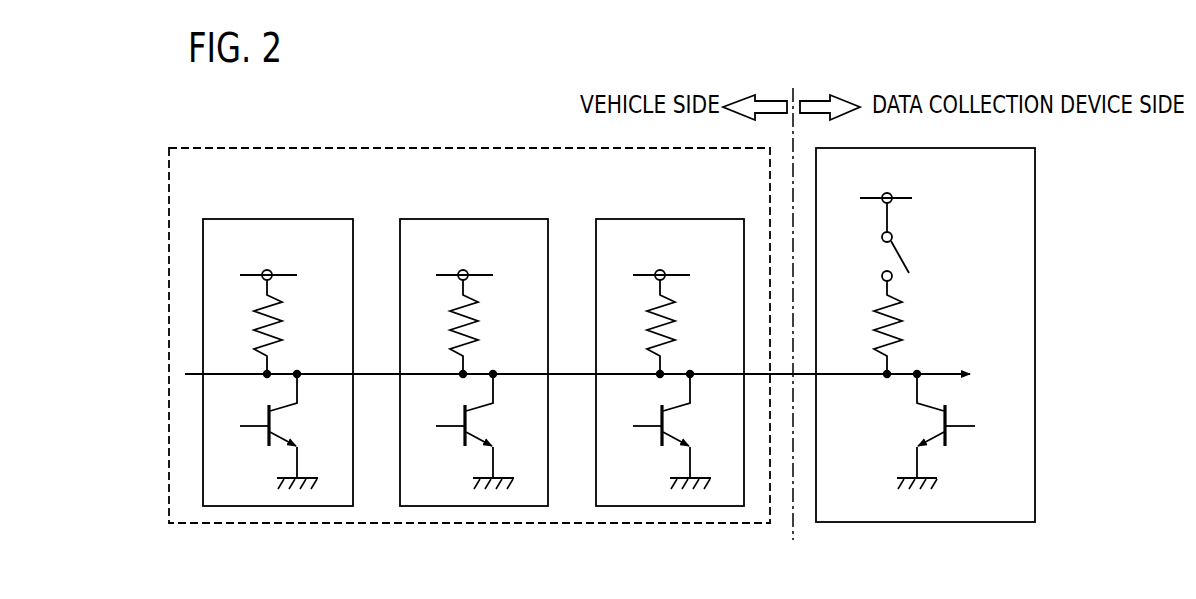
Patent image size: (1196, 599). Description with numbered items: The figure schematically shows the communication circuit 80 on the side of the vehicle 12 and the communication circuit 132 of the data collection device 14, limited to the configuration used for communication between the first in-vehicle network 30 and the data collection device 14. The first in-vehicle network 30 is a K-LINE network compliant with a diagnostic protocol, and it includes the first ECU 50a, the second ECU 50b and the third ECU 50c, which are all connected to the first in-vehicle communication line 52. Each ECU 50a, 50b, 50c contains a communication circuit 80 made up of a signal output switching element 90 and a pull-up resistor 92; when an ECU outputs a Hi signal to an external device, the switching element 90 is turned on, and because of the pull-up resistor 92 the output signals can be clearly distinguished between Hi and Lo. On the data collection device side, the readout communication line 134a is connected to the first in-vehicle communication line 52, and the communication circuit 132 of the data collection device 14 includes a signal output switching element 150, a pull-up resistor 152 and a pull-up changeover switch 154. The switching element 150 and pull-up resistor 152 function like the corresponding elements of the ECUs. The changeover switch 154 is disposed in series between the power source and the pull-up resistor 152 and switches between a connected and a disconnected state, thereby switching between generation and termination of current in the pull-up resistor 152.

The vehicle 12 is at (433, 68).
The data collection device 14 is at (1036, 175).
The first in-vehicle network 30 is at (297, 147).
The first ECU 50a is at (307, 218).
The second ECU 50b is at (505, 218).
The third ECU 50c is at (702, 218).
The first in-vehicle communication line 52 is at (369, 372).
The communication circuit 80 is at (293, 315).
The signal output switching element 90 is at (251, 430).
The pull-up resistor 92 is at (257, 323).
The communication circuit 132 is at (912, 305).
The readout communication line 134a is at (940, 372).
The signal output switching element 150 is at (955, 430).
The pull-up resistor 152 is at (878, 327).
The pull-up changeover switch 154 is at (906, 258).